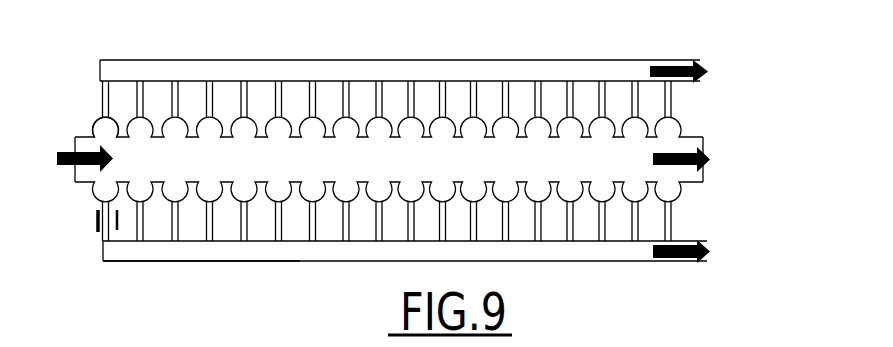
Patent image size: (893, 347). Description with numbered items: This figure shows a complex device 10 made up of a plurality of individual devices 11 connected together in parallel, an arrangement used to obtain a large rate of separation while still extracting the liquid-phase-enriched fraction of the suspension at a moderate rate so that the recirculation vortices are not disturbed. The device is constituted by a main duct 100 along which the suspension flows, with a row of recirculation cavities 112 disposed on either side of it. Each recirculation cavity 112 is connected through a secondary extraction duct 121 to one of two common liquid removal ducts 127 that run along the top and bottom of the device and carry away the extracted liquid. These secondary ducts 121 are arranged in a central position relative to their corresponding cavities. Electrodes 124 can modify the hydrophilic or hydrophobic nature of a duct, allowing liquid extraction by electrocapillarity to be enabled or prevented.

The complex device 10 is at (150, 264).
The individual device 11 is at (86, 116).
The main duct 100 is at (222, 165).
The recirculation cavity 112 is at (208, 191).
The upper fins 121 is at (212, 81).
The electrode 124 is at (95, 226).
The common liquid removal duct 127 is at (515, 68).